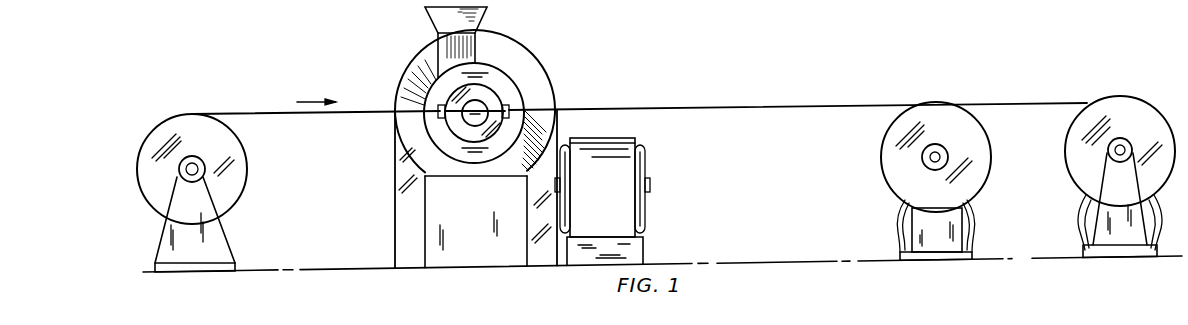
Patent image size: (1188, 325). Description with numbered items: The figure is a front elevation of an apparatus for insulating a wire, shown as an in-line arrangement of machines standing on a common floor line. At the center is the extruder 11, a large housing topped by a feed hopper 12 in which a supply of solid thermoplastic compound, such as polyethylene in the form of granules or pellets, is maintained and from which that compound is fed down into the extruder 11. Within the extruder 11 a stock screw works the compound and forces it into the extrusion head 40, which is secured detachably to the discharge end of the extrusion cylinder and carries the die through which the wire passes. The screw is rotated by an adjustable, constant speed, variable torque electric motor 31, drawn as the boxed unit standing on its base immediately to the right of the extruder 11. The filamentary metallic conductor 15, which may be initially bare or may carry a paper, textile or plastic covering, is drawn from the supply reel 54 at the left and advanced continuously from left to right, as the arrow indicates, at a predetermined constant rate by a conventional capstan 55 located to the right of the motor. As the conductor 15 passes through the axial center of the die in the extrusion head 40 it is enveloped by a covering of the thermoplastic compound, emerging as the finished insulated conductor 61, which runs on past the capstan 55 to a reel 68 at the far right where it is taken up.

The supply reel 54 is at (171, 124).
The conductor 15 is at (293, 114).
The feed hopper 12 is at (432, 20).
The extruder 11 is at (489, 137).
The extrusion head 40 is at (464, 123).
The electric motor 31 is at (637, 148).
The insulated conductor 61 is at (770, 107).
The capstan 55 is at (933, 106).
The take-up reel 68 is at (1146, 106).